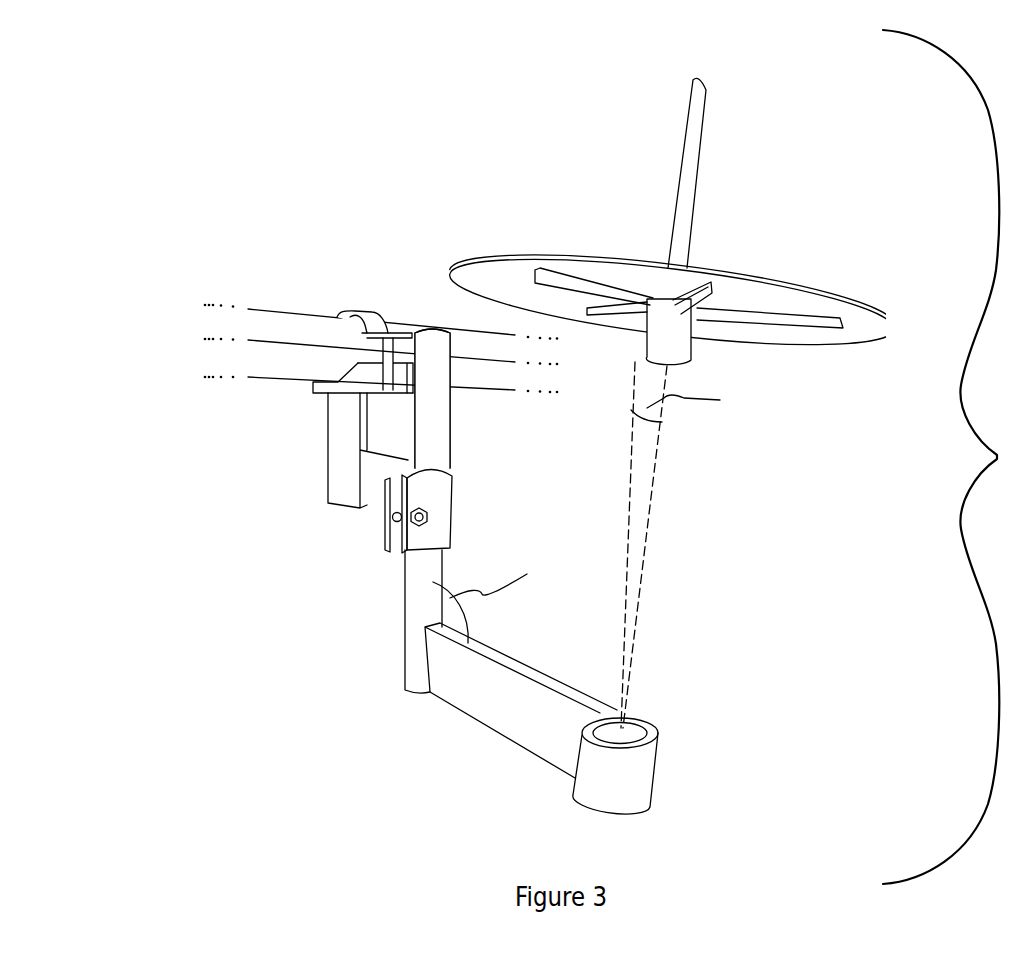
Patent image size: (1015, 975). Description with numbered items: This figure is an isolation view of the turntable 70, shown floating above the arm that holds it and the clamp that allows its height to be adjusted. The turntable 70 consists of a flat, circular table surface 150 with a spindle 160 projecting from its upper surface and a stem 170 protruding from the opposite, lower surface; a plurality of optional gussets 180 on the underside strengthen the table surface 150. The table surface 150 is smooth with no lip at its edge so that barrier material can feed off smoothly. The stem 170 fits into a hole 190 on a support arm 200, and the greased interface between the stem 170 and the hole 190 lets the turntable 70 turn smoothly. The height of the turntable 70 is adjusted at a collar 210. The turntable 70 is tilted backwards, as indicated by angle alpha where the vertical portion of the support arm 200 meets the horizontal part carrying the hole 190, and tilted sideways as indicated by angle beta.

The turntable 70 is at (176, 592).
The table surface 150 is at (820, 262).
The spindle 160 is at (687, 178).
The stem 170 is at (687, 343).
The gussets 180 is at (563, 283).
The hole 190 is at (630, 732).
The support arm 200 is at (404, 699).
The collar 210 is at (450, 517).